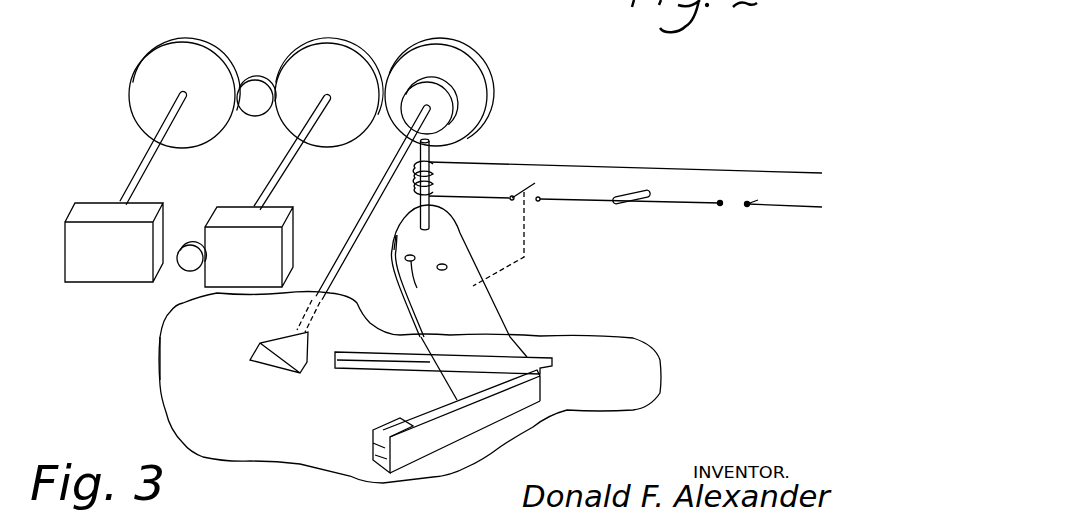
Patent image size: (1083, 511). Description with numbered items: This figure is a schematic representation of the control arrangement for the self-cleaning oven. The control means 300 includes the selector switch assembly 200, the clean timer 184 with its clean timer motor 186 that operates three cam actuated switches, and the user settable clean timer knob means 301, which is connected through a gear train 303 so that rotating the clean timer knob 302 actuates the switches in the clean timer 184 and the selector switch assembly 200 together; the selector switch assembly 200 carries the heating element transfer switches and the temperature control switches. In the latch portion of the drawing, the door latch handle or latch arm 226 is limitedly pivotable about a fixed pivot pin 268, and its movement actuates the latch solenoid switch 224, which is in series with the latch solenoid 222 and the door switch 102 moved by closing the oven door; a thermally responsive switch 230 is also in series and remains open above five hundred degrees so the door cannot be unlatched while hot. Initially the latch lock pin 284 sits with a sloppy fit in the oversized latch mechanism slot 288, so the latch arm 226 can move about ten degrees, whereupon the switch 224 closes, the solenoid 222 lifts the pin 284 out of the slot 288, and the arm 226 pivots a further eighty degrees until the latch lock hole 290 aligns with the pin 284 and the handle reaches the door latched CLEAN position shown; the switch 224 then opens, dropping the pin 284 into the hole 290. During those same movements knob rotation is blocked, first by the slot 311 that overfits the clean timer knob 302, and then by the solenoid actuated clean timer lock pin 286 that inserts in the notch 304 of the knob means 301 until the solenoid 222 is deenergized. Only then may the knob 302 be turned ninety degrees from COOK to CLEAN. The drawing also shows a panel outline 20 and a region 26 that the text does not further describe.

The control panel 20 is at (660, 400).
The panel 26 is at (160, 391).
The door switch 102 is at (748, 205).
The clean timer 184 is at (238, 207).
The clean timer motor 186 is at (186, 268).
The selector switch assembly 200 is at (78, 283).
The latch solenoid 222 is at (432, 180).
The latch solenoid switch 224 is at (530, 190).
The door latch handle 226 is at (496, 315).
The thermally responsive switch 230 is at (632, 203).
The pivot pin 268 is at (446, 264).
The latch lock pin 284 is at (428, 222).
The clean timer lock pin 286 is at (433, 160).
The latch mechanism slot 288 is at (392, 287).
The latch lock hole 290 is at (412, 212).
The control means 300 is at (112, 162).
The clean timer knob means 301 is at (368, 198).
The clean timer knob 302 is at (263, 360).
The gear train 303 is at (353, 45).
The notch 304 is at (424, 136).
The slot 311 is at (380, 443).